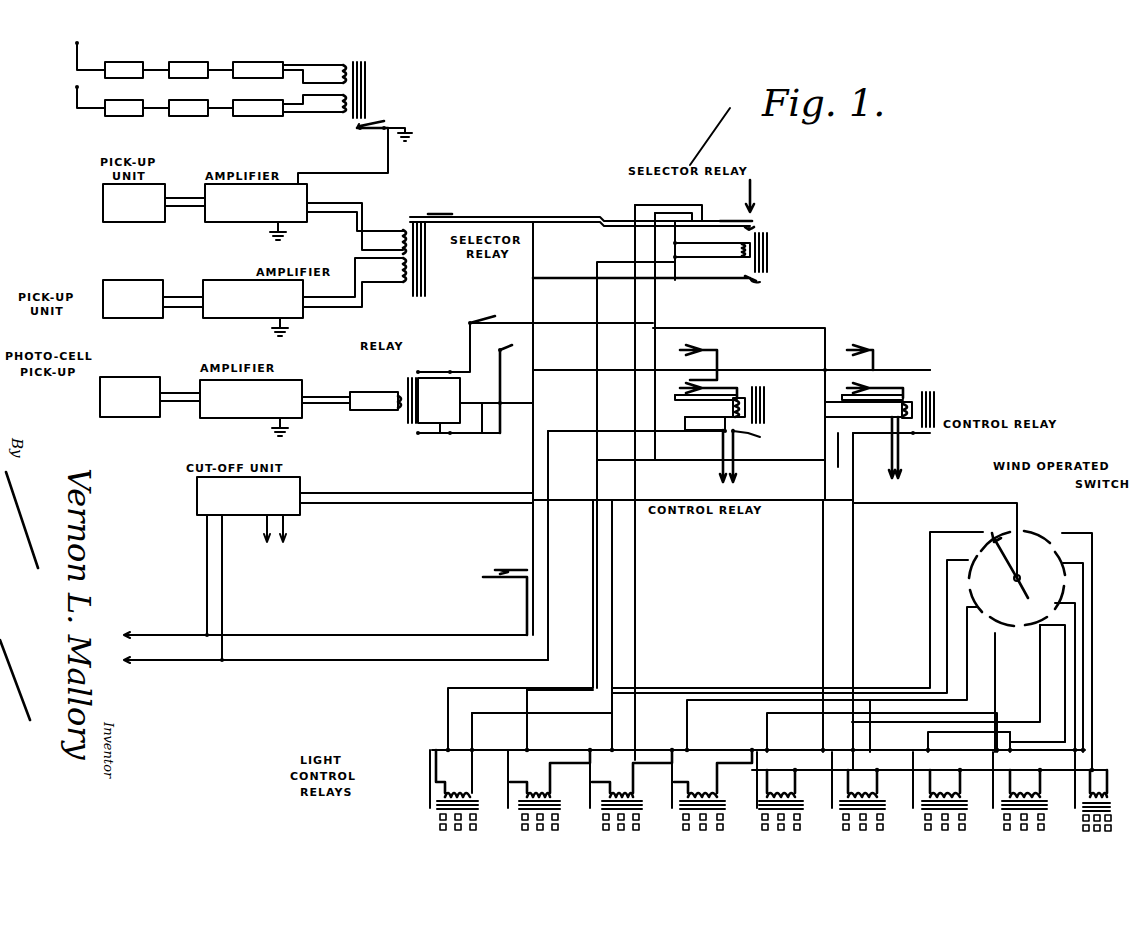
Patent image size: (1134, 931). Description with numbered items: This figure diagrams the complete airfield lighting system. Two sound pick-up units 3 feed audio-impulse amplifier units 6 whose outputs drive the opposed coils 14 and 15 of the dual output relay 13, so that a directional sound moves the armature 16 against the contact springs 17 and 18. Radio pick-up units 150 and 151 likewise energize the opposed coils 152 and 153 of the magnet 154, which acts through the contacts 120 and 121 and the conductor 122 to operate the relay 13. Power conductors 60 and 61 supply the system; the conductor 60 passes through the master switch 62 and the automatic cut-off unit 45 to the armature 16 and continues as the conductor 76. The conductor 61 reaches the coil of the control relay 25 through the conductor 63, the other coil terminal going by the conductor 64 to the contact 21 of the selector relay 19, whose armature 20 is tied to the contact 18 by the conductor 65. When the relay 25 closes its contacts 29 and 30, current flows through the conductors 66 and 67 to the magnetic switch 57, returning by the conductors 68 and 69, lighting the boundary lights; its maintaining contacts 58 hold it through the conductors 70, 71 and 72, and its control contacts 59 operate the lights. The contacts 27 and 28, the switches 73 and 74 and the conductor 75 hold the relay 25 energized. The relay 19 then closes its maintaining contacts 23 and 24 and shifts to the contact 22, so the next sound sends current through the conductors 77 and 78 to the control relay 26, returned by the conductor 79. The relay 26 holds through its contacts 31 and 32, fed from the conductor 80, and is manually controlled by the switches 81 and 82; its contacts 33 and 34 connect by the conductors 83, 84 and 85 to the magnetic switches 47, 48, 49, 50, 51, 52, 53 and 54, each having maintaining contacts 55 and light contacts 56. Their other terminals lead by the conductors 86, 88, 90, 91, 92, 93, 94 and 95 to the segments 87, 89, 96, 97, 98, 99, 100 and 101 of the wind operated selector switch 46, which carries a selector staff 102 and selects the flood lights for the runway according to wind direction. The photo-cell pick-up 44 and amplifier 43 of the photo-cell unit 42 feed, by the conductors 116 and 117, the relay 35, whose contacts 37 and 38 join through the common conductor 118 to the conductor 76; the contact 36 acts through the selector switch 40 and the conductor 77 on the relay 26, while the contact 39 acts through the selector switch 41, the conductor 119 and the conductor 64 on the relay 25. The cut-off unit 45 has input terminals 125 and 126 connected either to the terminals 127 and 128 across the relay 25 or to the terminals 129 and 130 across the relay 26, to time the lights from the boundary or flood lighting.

The pick-up unit 3 is at (138, 222).
The audio-impulse amplifier unit 6 is at (240, 300).
The dual output relay 13 is at (427, 258).
The coil 14 is at (400, 233).
The coil 15 is at (398, 284).
The armature 16 is at (428, 215).
The contact spring 17 is at (450, 214).
The contact spring 18 is at (462, 214).
The selector relay 19 is at (770, 250).
The armature 20 is at (758, 215).
The contact 21 is at (729, 212).
The contact 22 is at (760, 226).
The maintaining contact 23 is at (752, 282).
The maintaining contact 24 is at (765, 282).
The control relay 25 is at (766, 404).
The control relay 26 is at (935, 404).
The contact 27 is at (720, 390).
The contact 28 is at (748, 386).
The contact 29 is at (736, 460).
The contact 30 is at (757, 438).
The contact 31 is at (885, 380).
The contact 32 is at (915, 380).
The contact 33 is at (925, 443).
The contact 34 is at (905, 440).
The photo-cell unit operated relay 35 is at (408, 418).
The contact 36 is at (428, 370).
The contact 37 is at (439, 400).
The contact 38 is at (428, 434).
The contact 39 is at (445, 435).
The selector switch 40 is at (496, 314).
The selector switch 41 is at (506, 352).
The photo-cell unit 42 is at (248, 405).
The amplifier 43 is at (290, 410).
The photo-cell pick-up 44 is at (140, 408).
The automatic cut-off unit 45 is at (310, 515).
The wind operated selector switch 46 is at (1038, 520).
The magnetic switch 47 is at (539, 788).
The magnetic switch 48 is at (628, 795).
The magnetic switch 49 is at (703, 788).
The magnetic switch 50 is at (780, 788).
The magnetic switch 51 is at (870, 795).
The magnetic switch 52 is at (950, 795).
The magnetic switch 53 is at (1032, 795).
The magnetic switch 54 is at (1082, 805).
The maintaining contacts 55 is at (507, 780).
The light operating contacts 56 is at (560, 823).
The magnetic switch 57 is at (448, 782).
The maintaining contacts 58 is at (422, 793).
The control contacts 59 is at (435, 815).
The electric current conductor 60 is at (310, 632).
The electric current conductor 61 is at (328, 662).
The manually operated master switch 62 is at (495, 568).
The conductor 63 is at (685, 417).
The conductor 64 is at (640, 303).
The conductor 65 is at (580, 218).
The conductor 66 is at (618, 430).
The conductor 67 is at (592, 576).
The conductor 68 is at (620, 595).
The conductor 69 is at (574, 505).
The conductor 70 is at (430, 782).
The conductor 71 is at (632, 750).
The conductor 72 is at (821, 622).
The switch 73 is at (690, 348).
The switch 74 is at (708, 382).
The conductor 75 is at (596, 357).
The conductor 76 is at (540, 425).
The conductor 77 is at (800, 326).
The conductor 78 is at (600, 250).
The conductor 79 is at (806, 462).
The conductor 80 is at (795, 378).
The switch 81 is at (862, 345).
The switch 82 is at (875, 385).
The conductor 83 is at (829, 462).
The conductor 84 is at (858, 568).
The conductor 85 is at (865, 770).
The conductor 86 is at (663, 690).
The segment 87 is at (995, 526).
The conductor 88 is at (700, 698).
The segment 89 is at (968, 565).
The conductor 90 is at (872, 688).
The conductor 91 is at (890, 708).
The conductor 92 is at (1030, 700).
The conductor 93 is at (1072, 694).
The conductor 94 is at (1081, 672).
The conductor 95 is at (1090, 650).
The segment 96 is at (975, 598).
The segment 97 is at (1000, 606).
The segment 98 is at (1038, 622).
The segment 99 is at (1056, 657).
The segment 100 is at (1060, 545).
The segment 101 is at (1040, 525).
The selector staff 102 is at (883, 595).
The conductor 116 is at (368, 383).
The conductor 117 is at (360, 410).
The common conductor 118 is at (483, 433).
The conductor 119 is at (590, 333).
The contact 120 is at (390, 122).
The contact 121 is at (358, 130).
The conductor 122 is at (390, 160).
The input terminal 125 is at (264, 535).
The input terminal 126 is at (290, 535).
The terminal 127 is at (720, 444).
The terminal 128 is at (718, 462).
The terminal 129 is at (888, 475).
The terminal 130 is at (905, 476).
The radio pick-up unit 150 is at (250, 70).
The radio pick-up unit 151 is at (250, 108).
The coil 152 is at (352, 58).
The coil 153 is at (340, 112).
The magnet 154 is at (375, 87).